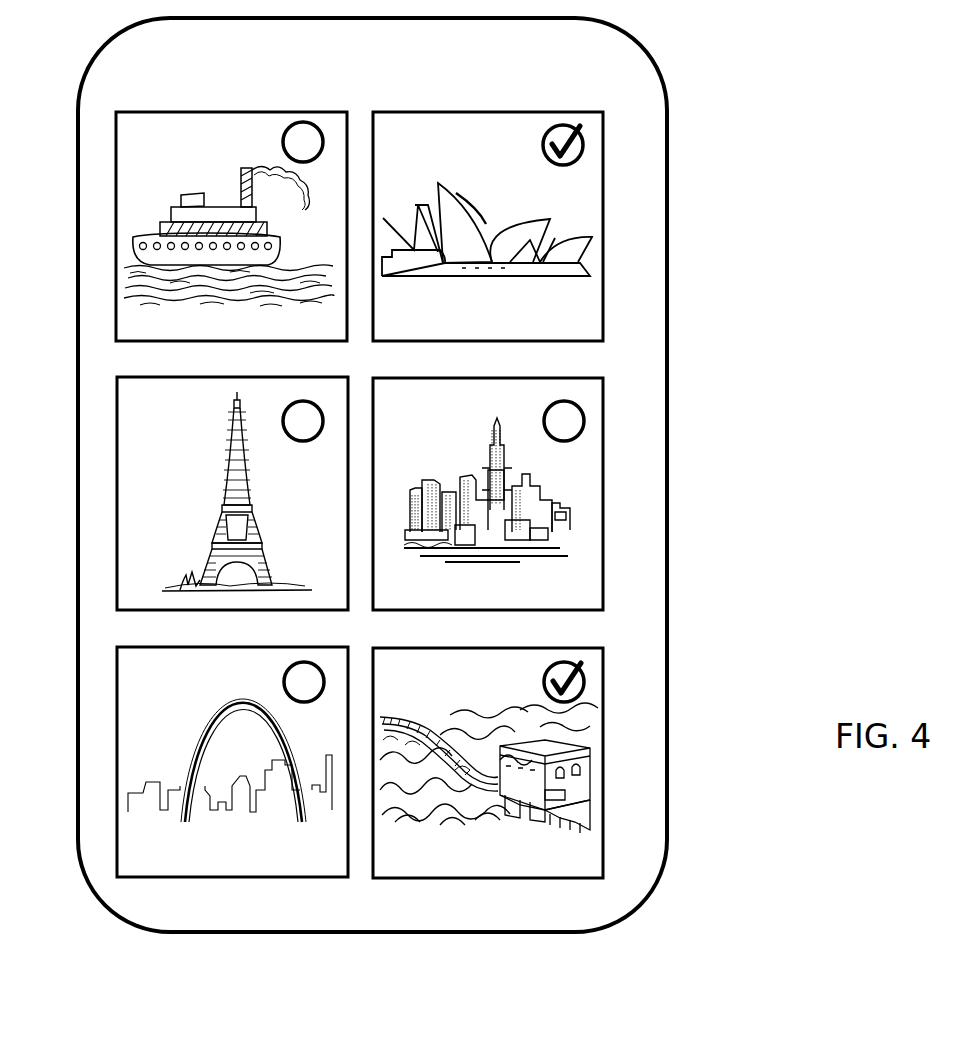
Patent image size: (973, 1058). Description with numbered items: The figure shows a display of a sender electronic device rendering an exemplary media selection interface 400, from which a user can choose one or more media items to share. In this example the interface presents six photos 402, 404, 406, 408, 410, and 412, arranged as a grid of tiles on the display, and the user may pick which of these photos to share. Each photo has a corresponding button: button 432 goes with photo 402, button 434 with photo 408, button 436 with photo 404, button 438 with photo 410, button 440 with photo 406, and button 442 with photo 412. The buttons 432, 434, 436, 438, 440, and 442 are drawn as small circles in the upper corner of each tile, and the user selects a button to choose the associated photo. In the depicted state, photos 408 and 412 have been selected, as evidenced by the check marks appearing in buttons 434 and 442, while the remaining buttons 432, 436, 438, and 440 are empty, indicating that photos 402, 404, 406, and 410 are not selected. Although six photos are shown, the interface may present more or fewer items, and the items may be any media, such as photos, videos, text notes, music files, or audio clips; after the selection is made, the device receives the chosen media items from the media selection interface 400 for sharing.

The media selection interface 400 is at (712, 118).
The photo 402 is at (194, 151).
The photo 404 is at (194, 431).
The photo 406 is at (187, 691).
The photo 408 is at (447, 151).
The photo 410 is at (435, 429).
The photo 412 is at (435, 689).
The button 432 is at (303, 128).
The button 434 is at (558, 132).
The button 436 is at (300, 408).
The button 438 is at (560, 408).
The button 440 is at (303, 668).
The button 442 is at (560, 670).